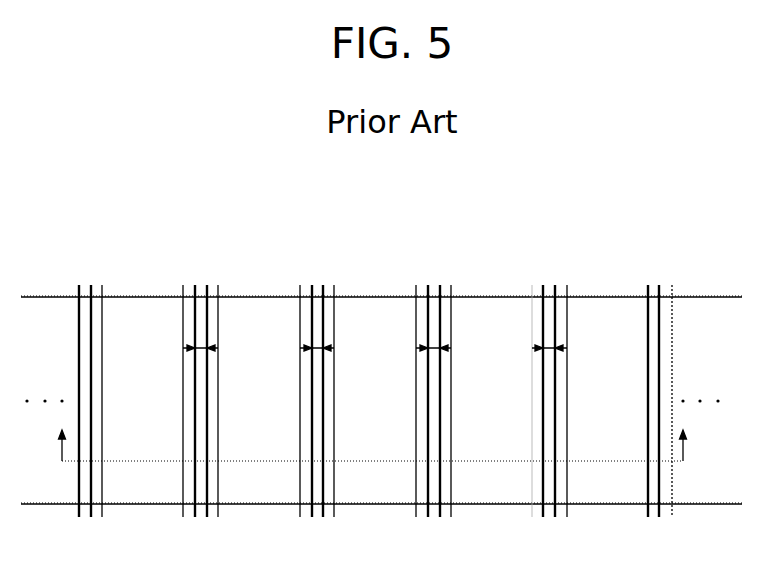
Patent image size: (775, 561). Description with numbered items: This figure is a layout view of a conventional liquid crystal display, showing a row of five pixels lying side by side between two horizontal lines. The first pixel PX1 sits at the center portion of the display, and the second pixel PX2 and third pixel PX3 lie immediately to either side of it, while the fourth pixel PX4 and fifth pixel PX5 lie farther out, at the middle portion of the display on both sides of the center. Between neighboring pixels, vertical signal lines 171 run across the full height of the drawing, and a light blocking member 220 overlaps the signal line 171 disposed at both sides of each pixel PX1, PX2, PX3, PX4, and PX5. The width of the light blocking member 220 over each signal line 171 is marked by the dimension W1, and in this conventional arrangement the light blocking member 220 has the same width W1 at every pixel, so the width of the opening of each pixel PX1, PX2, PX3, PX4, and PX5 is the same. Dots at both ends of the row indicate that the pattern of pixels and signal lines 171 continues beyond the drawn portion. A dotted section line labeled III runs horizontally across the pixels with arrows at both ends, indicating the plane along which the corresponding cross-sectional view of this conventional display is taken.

The signal line 171 is at (83, 258).
The light blocking member 220 is at (532, 322).
The width of light blocking member W1 is at (375, 338).
The first pixel PX1 is at (373, 397).
The second pixel PX2 is at (258, 397).
The third pixel PX3 is at (490, 397).
The fourth pixel PX4 is at (143, 397).
The fifth pixel PX5 is at (606, 397).
The section line III- III is at (372, 435).